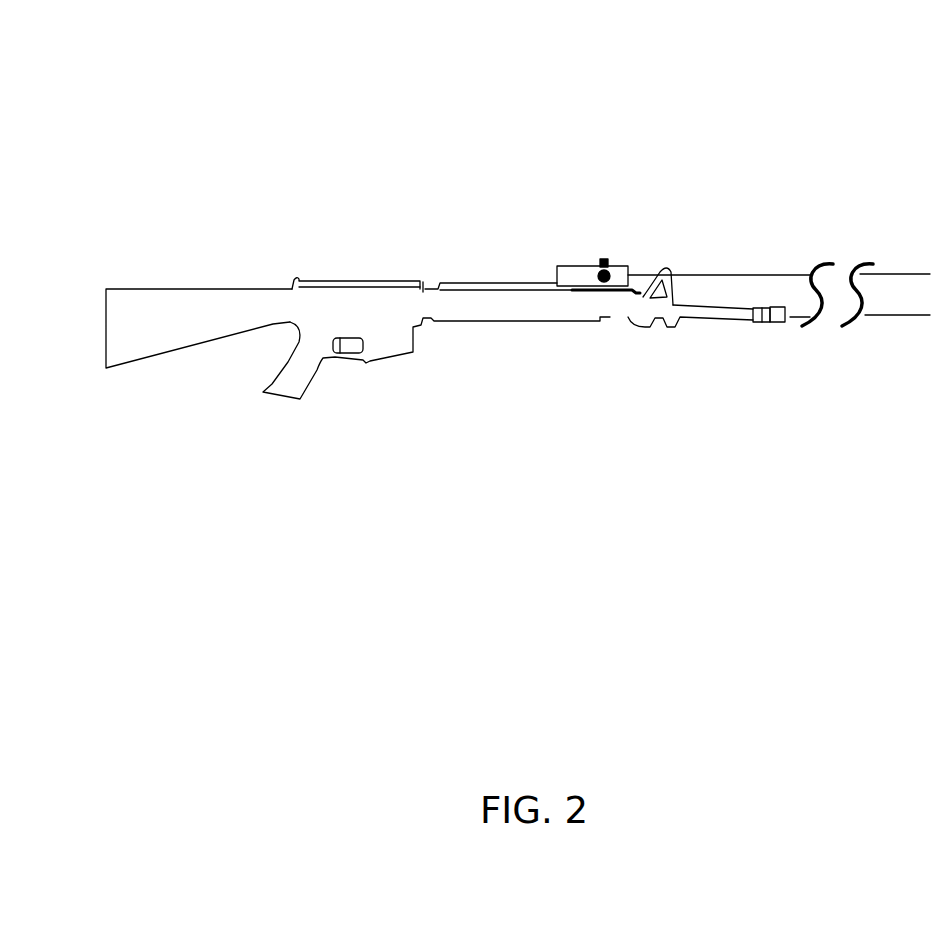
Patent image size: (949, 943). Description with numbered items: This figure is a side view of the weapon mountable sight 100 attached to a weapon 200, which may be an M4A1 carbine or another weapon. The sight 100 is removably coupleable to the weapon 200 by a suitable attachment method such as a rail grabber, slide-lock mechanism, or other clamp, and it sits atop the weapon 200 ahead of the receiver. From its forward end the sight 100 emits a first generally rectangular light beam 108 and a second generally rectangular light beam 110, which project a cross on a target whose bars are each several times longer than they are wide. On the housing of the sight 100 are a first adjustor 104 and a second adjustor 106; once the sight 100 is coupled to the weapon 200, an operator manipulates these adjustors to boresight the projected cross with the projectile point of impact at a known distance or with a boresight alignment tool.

The weapon mountable sight 100 is at (572, 265).
The first adjustor 104 is at (600, 258).
The second adjustor 106 is at (604, 282).
The first generally rectangular light beam 108 is at (697, 268).
The second generally rectangular light beam 110 is at (895, 294).
The weapon 200 is at (197, 338).